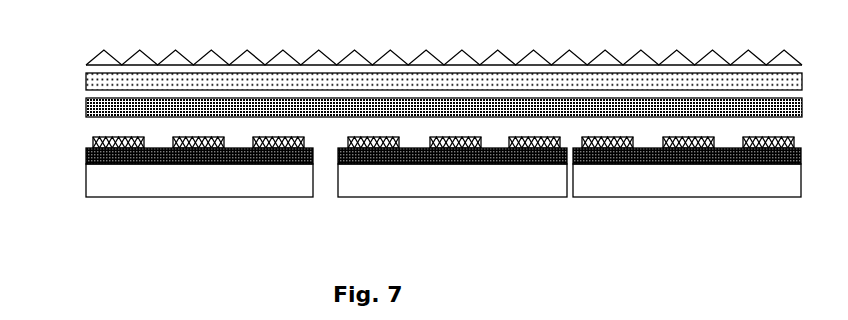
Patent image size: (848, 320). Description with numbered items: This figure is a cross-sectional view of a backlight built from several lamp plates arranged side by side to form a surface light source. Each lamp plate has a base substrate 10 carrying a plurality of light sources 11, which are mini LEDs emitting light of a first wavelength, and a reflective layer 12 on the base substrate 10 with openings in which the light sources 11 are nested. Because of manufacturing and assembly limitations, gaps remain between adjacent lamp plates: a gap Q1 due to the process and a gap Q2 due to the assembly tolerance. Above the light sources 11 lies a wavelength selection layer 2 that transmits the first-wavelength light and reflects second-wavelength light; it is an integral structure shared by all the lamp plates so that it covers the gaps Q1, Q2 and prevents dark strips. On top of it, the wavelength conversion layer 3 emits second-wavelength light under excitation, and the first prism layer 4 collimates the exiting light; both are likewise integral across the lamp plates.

The first prism layer 4 is at (100, 58).
The wavelength conversion layer 3 is at (100, 82).
The wavelength selection layer 2 is at (100, 105).
The light source 11 is at (106, 141).
The reflective layer 12 is at (103, 153).
The base substrate 10 is at (110, 185).
The gap due to the process Q1 is at (570, 152).
The gap due to the assembly tolerance Q2 is at (325, 153).